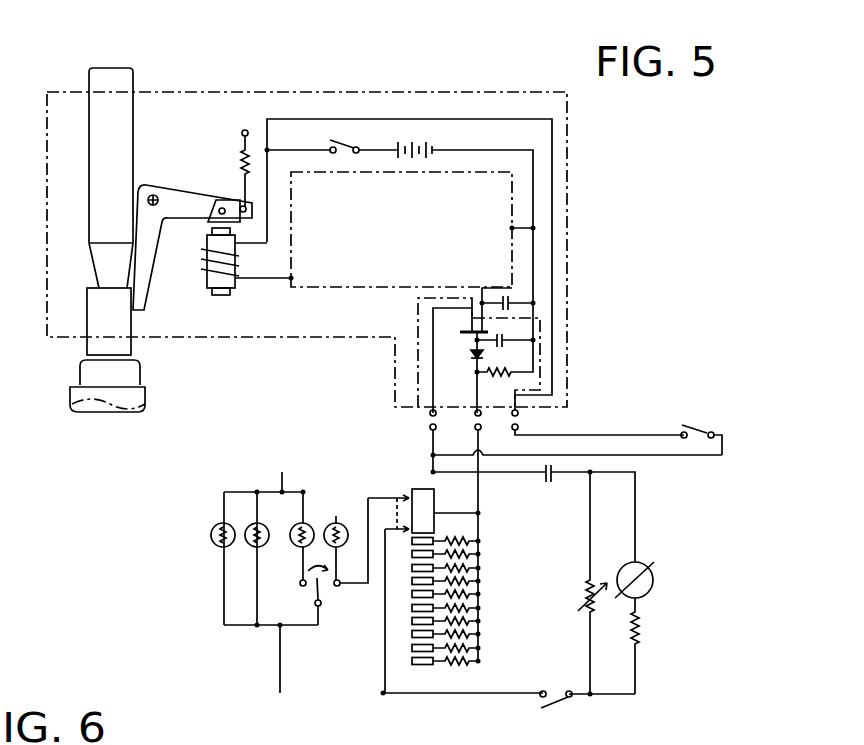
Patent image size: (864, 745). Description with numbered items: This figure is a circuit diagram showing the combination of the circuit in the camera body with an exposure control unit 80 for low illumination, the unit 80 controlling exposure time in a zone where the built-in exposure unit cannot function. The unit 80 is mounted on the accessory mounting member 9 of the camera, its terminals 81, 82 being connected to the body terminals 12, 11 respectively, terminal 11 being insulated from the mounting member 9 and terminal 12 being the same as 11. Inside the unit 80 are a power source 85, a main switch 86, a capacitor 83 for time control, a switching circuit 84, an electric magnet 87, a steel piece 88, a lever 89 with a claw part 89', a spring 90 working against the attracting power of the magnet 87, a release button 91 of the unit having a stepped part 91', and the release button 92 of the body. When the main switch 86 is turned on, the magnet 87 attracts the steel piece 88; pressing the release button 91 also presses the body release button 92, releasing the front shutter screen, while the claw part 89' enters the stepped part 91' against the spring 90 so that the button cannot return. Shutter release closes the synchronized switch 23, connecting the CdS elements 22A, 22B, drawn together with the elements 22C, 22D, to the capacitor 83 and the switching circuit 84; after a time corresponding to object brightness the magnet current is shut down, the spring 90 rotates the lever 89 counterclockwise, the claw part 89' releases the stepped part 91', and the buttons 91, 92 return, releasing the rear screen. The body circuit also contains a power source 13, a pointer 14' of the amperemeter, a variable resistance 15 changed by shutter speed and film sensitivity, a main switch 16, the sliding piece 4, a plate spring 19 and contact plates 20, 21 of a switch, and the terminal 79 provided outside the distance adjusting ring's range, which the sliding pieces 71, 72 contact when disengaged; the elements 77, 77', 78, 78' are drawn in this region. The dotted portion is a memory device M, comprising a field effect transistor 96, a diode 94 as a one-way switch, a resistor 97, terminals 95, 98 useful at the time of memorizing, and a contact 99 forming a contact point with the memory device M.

The exposure control unit 80 is at (392, 92).
The release button for the unit 91 is at (111, 156).
The stepped part of the release button 91' is at (135, 308).
The release button for the body 92 is at (87, 395).
The lever 89 is at (192, 230).
The claw part of the lever 89' is at (169, 322).
The steel piece 88 is at (222, 203).
The spring 90 is at (240, 155).
The electric magnet 87 is at (222, 295).
The switching circuit 84 is at (533, 253).
The main switch of the unit 86 is at (348, 140).
The power source of the unit 85 is at (412, 140).
The terminal of the unit 81 is at (480, 300).
The capacitor for time control 83 is at (503, 297).
The contact 99 is at (533, 303).
The memory device M is at (397, 354).
The field effect transistor 96 is at (484, 358).
The diode 94 is at (484, 345).
The terminal 95 is at (414, 419).
The terminal 98 is at (468, 408).
The resistor 97 is at (501, 399).
The accessory mounting member 9 is at (430, 428).
The terminal of the body 12 is at (476, 428).
The terminal of the body 11 is at (514, 430).
The terminal of the unit 82 is at (520, 423).
The synchronized switch 23 is at (704, 426).
The power source 13 is at (548, 483).
The variable resistance 15 is at (584, 585).
The pointer 14' is at (545, 623).
The sliding piece 4 is at (637, 562).
The main switch 16 is at (556, 707).
The CdS 22A is at (211, 537).
The CdS 22B is at (248, 528).
The lamp C 22C is at (334, 516).
The lamp D 22D is at (293, 528).
The contact plate for switch 21 is at (300, 586).
The plate spring for switch 19 is at (316, 588).
The contact plate for switch 20 is at (339, 587).
The sliding piece 72 is at (386, 493).
The terminal 79 is at (435, 492).
The sliding piece 71 is at (398, 546).
The switching elements 77 is at (441, 617).
The switching element 77' is at (390, 647).
The resistors 78 is at (471, 616).
The resistor 78' is at (478, 652).